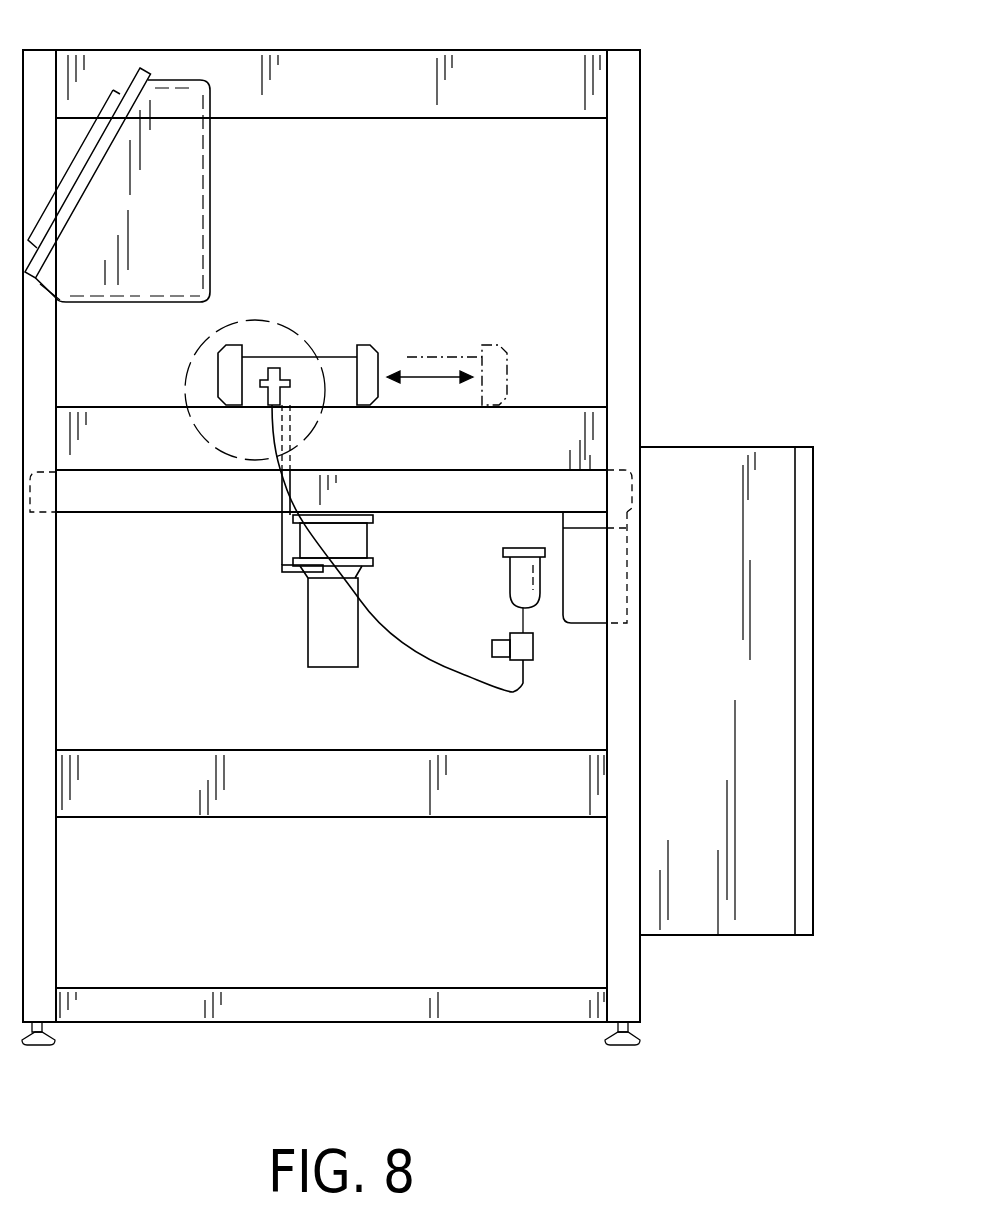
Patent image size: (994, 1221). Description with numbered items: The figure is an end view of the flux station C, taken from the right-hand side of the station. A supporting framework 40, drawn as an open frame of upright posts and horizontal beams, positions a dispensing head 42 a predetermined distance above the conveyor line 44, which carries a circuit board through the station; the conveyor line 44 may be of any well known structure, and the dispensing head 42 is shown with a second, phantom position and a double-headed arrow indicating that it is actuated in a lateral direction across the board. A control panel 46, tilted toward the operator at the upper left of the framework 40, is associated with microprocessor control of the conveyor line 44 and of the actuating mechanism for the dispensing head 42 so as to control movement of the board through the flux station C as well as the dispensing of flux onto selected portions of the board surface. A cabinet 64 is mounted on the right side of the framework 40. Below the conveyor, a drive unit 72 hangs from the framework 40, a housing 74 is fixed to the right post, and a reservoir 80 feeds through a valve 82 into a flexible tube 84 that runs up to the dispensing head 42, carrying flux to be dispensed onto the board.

The flux station C is at (668, 294).
The supporting framework 40 is at (42, 651).
The dispensing head 42 is at (277, 372).
The conveyor line 44 is at (233, 380).
The control panel 46 is at (185, 248).
The control cabinet 64 is at (770, 644).
The motor 72 is at (322, 633).
The junction box 74 is at (592, 607).
The reservoir 80 is at (522, 575).
The valve 82 is at (502, 645).
The supply tube 84 is at (425, 655).